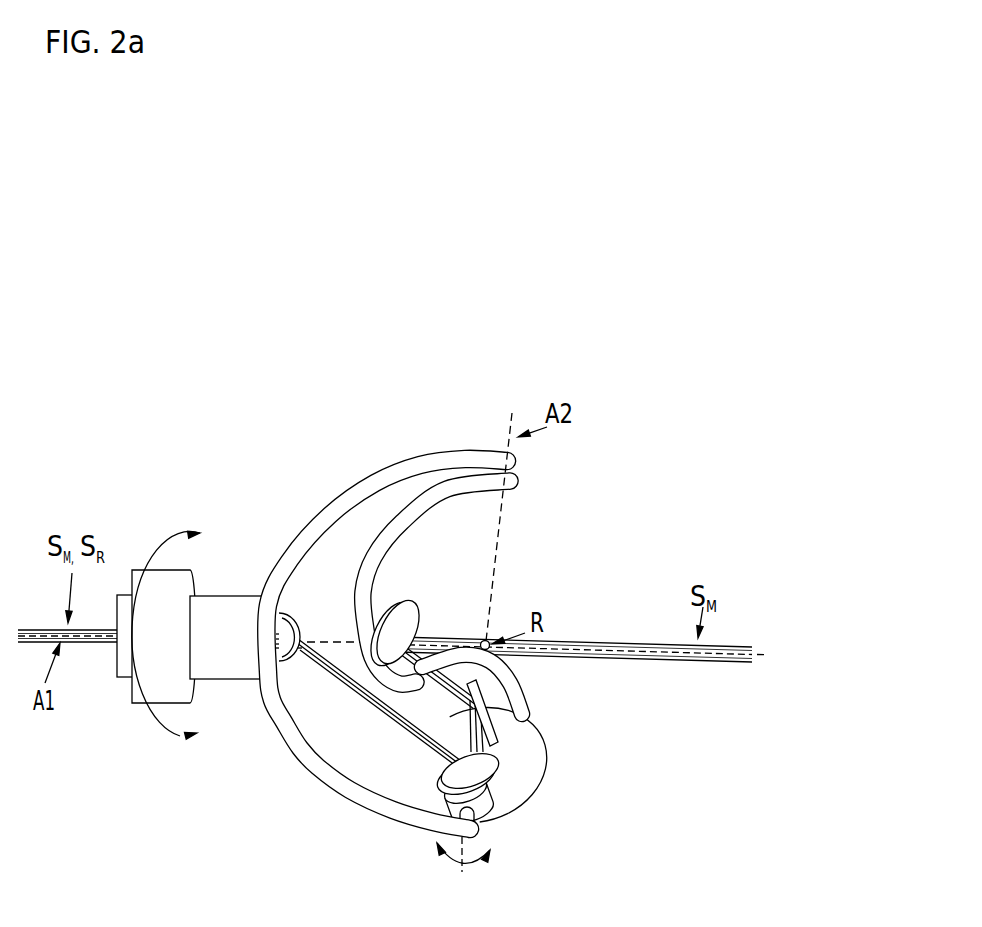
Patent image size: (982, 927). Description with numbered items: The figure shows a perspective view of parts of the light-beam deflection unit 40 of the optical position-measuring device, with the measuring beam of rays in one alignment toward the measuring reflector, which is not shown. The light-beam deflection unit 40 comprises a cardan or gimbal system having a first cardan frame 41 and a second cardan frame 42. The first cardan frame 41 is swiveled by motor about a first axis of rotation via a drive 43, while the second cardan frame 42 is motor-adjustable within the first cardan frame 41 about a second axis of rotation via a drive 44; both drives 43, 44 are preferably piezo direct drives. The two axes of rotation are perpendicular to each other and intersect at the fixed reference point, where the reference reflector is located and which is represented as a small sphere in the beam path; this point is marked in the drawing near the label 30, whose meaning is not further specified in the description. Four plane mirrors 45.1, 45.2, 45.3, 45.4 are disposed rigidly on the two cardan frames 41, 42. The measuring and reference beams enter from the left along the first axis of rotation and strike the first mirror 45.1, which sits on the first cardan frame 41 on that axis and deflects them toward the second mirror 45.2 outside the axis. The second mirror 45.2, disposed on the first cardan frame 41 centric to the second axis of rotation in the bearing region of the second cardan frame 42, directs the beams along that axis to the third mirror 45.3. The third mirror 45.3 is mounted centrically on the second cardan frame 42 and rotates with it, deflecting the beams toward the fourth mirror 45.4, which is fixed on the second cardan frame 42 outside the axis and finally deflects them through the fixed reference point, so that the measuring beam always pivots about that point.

The light-beam deflection unit 40 is at (151, 857).
The first cardan frame 41 is at (263, 748).
The second cardan frame 42 is at (455, 515).
The drive 43 is at (206, 562).
The drive 44 is at (508, 827).
The first mirror 45.1 is at (296, 599).
The second mirror 45.2 is at (512, 770).
The third mirror 45.3 is at (514, 728).
The fourth mirror 45.4 is at (433, 610).
The target point / retroreflector position 30 is at (504, 620).